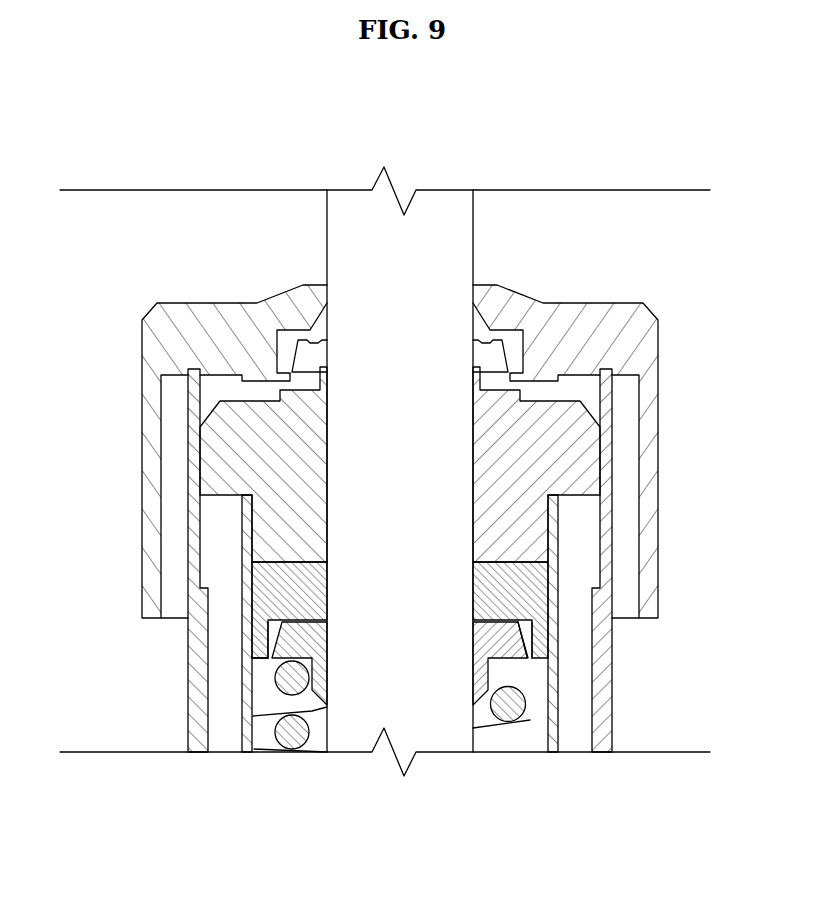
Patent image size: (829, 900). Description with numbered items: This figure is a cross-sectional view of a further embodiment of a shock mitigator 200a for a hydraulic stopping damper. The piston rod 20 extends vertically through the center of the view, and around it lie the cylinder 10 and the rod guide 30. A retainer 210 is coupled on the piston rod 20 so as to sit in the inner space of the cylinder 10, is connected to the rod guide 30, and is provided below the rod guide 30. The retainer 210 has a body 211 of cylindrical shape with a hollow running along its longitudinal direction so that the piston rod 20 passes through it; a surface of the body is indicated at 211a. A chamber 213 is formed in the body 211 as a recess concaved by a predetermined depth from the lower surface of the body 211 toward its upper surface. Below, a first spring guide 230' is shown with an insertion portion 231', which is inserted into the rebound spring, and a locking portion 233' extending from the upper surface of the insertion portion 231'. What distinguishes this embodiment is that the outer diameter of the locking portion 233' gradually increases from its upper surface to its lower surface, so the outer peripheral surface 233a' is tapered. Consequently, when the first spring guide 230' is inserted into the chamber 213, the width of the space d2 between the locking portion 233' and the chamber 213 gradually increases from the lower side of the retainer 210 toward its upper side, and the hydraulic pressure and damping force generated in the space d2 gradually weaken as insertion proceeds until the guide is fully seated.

The cylinder 10 is at (593, 638).
The piston rod 20 is at (443, 212).
The rod guide 30 is at (596, 452).
The retainer 210 is at (548, 594).
The body 211 is at (268, 594).
The seal lip surface 211a is at (310, 564).
The space d2 is at (282, 634).
The shock mitigator 200a is at (262, 680).
The chamber 213 is at (275, 652).
The first spring guide 230' is at (584, 752).
The insertion portion 231' is at (525, 759).
The locking portion 233' is at (546, 726).
The outer peripheral surface 233a' is at (607, 726).